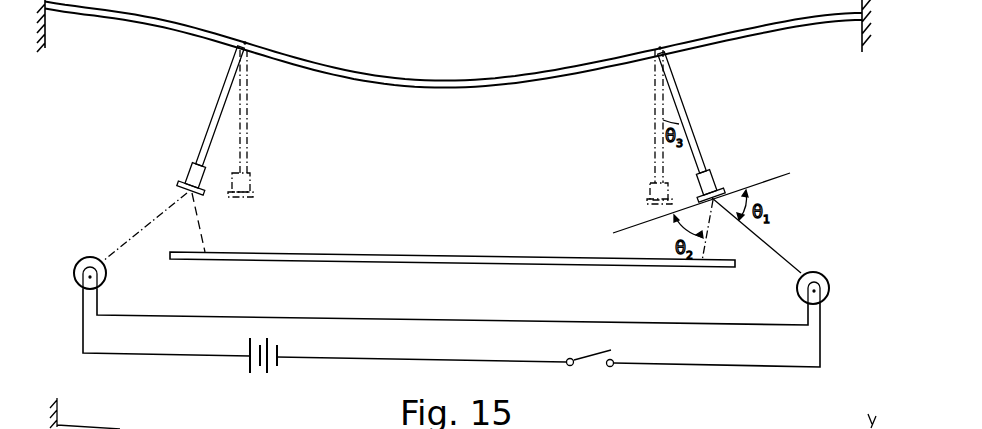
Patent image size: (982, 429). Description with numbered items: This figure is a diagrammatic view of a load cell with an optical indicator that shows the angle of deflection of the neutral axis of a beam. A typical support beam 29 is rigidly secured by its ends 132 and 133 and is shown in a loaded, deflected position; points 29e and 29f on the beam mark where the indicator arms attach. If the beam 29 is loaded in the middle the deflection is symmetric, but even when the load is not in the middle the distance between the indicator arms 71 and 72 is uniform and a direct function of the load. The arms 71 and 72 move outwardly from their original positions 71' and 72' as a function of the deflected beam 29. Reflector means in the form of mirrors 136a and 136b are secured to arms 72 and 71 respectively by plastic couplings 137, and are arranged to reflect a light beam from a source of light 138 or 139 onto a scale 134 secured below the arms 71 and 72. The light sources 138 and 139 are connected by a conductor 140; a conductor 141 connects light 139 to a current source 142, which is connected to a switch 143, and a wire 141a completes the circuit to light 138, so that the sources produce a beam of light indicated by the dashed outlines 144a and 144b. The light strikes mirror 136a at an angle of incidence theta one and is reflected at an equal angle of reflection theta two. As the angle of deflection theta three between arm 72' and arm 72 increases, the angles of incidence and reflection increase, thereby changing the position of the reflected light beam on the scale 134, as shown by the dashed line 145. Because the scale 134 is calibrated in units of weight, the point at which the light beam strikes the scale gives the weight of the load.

The support beam 29 is at (449, 79).
The point on strip 29e is at (247, 40).
The point on strip 29f is at (660, 40).
The indicator arm 71 is at (210, 106).
The original position of arm 71 71' is at (264, 123).
The indicator arm 72 is at (699, 112).
The original position of arm 72 72' is at (641, 127).
The end 132 is at (45, 44).
The end 133 is at (861, 52).
The scale 134 is at (462, 262).
The mirror 136a is at (701, 198).
The mirror 136b is at (223, 222).
The plastic coupling 137 is at (189, 176).
The source of light 138 is at (830, 276).
The source of light 139 is at (77, 270).
The conductor 140 is at (378, 320).
The conductor 141 is at (172, 357).
The wire 141a is at (757, 364).
The current source 142 is at (268, 372).
The switch 143 is at (594, 364).
The dashed outline of light beam 144a is at (773, 249).
The dashed outline of light beam 144b is at (136, 237).
The dashed line 145 is at (704, 250).